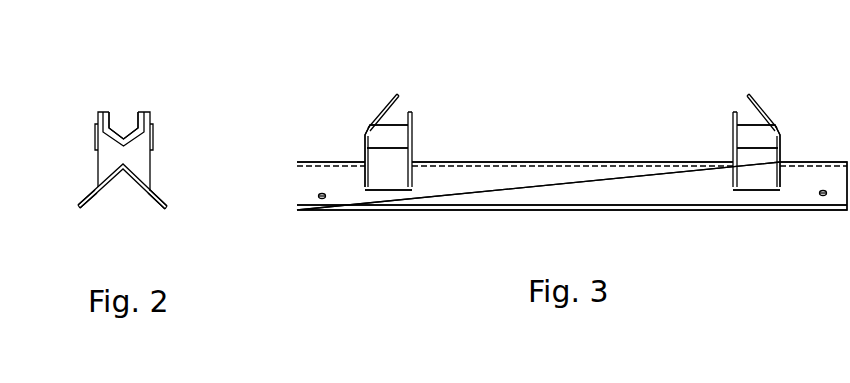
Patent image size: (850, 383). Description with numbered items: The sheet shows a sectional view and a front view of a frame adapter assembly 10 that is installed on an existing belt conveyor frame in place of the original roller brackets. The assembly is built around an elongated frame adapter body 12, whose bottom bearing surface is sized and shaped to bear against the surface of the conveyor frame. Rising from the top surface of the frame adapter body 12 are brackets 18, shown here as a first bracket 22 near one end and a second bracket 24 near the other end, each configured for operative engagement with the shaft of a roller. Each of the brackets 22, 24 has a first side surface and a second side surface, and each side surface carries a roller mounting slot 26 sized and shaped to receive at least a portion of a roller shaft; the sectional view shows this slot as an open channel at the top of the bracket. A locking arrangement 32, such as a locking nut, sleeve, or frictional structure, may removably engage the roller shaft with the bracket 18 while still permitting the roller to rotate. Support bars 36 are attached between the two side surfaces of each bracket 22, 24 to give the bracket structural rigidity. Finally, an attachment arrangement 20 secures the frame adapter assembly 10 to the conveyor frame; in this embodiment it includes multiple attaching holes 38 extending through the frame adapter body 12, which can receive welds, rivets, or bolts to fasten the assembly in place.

In FIG. 3, the frame adapter assembly 10 is at (568, 122).
In FIG. 2, the frame adapter body 12 is at (108, 175).
In FIG. 3, the frame adapter body 12 is at (495, 185).
In FIG. 3, the bracket 18 is at (442, 130).
In FIG. 3, the attachment arrangement 20 is at (325, 218).
In FIG. 3, the first bracket 22 is at (367, 125).
In FIG. 3, the second bracket 24 is at (778, 120).
In FIG. 2, the roller mounting slot 26 is at (123, 121).
In FIG. 2, the locking arrangement 32 is at (145, 123).
In FIG. 2, the support bar 36 is at (97, 137).
In FIG. 2, the attaching hole 38 is at (162, 193).